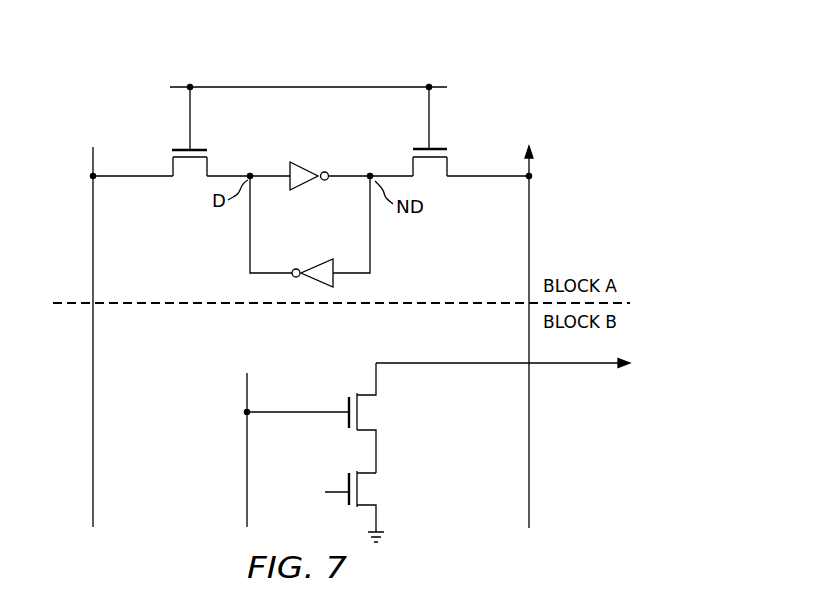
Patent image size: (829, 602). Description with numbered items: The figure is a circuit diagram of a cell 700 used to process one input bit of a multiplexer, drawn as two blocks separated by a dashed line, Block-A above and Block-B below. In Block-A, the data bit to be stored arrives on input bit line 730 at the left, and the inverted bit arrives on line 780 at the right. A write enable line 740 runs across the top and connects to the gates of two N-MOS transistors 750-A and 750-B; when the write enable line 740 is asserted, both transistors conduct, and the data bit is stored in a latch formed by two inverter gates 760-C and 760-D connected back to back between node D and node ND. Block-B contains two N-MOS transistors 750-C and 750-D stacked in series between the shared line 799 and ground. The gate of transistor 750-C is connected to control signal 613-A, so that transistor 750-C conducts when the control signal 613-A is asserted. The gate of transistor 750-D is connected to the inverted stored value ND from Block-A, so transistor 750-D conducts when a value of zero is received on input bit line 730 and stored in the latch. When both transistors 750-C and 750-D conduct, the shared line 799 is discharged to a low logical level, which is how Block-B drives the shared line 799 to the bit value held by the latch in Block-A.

The cell 700 is at (543, 111).
The write enable line 740 is at (283, 86).
The N-MOS transistor 750-A is at (181, 148).
The N-MOS transistor 750-B is at (433, 149).
The inverter gate 760-C is at (320, 148).
The inverter gate 760-D is at (313, 260).
The line 780 is at (530, 226).
The input bit line 730 is at (92, 365).
The control signal 613-A is at (246, 461).
The N-MOS transistor 750-C is at (348, 402).
The N-MOS transistor 750-D is at (348, 500).
The shared line 799 is at (580, 365).